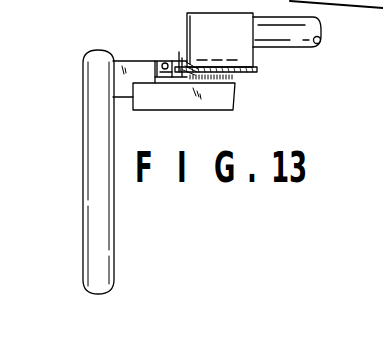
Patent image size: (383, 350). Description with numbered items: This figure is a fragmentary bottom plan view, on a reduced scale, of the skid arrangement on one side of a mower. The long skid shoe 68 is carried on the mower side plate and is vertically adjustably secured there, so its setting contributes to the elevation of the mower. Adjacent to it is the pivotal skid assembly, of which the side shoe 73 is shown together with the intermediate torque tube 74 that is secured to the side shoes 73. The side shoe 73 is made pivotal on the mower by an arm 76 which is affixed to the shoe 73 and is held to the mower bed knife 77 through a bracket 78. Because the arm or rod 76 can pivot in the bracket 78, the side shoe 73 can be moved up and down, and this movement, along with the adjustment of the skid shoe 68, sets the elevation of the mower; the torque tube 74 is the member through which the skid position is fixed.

The skid shoe 68 is at (92, 150).
The side shoe 73 is at (243, 55).
The torque tube 74 is at (303, 40).
The arm 76 is at (181, 64).
The bed knife 77 is at (128, 65).
The bracket 78 is at (153, 58).